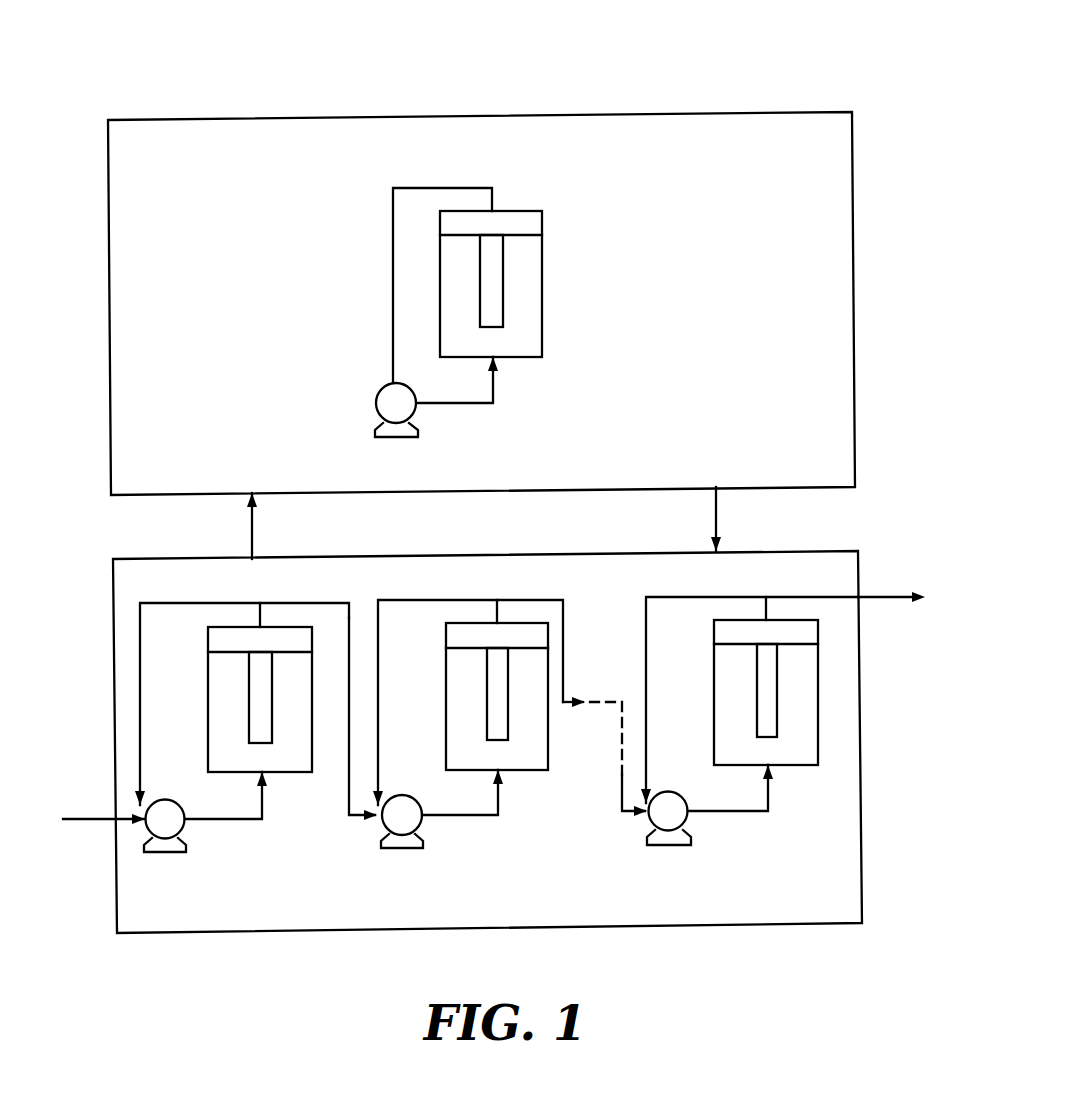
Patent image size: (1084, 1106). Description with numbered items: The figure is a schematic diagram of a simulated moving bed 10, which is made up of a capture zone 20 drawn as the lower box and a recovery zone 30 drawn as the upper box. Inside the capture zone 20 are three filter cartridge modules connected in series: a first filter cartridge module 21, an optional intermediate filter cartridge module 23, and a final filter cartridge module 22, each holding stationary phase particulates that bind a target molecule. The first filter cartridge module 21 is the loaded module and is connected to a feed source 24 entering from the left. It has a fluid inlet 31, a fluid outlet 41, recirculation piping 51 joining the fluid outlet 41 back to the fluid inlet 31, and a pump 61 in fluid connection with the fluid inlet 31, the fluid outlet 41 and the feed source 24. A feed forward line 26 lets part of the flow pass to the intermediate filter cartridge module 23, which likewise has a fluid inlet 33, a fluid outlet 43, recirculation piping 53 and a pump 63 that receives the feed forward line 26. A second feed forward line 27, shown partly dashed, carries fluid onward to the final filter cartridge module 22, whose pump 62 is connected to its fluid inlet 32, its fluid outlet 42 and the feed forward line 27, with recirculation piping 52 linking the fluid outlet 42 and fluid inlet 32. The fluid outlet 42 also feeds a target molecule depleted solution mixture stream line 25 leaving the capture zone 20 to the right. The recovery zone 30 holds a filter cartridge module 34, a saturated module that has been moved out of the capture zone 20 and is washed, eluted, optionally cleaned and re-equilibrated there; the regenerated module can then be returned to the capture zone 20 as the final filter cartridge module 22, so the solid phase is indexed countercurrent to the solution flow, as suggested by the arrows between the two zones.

The simulated moving bed 10 is at (807, 72).
The capture zone 20 is at (597, 917).
The first filter cartridge module 21 is at (232, 833).
The final filter cartridge module 22 is at (762, 837).
The intermediate filter cartridge module 23 is at (485, 840).
The feed source 24 is at (83, 815).
The target molecule depleted solution mixture stream line 25 is at (882, 590).
The feed forward line 26 is at (350, 618).
The feed forward line 27 is at (567, 615).
The recovery zone 30 is at (552, 460).
The fluid inlet 31 is at (263, 800).
The fluid inlet 32 is at (770, 793).
The fluid inlet 33 is at (500, 797).
The filter cartridge module 34 is at (557, 275).
The fluid outlet 41 is at (262, 615).
The fluid outlet 42 is at (768, 605).
The fluid outlet 43 is at (500, 608).
The recirculation piping 51 is at (197, 603).
The recirculation piping 52 is at (687, 597).
The recirculation piping 53 is at (442, 600).
The pump 61 is at (163, 853).
The pump 62 is at (678, 847).
The pump 63 is at (402, 850).